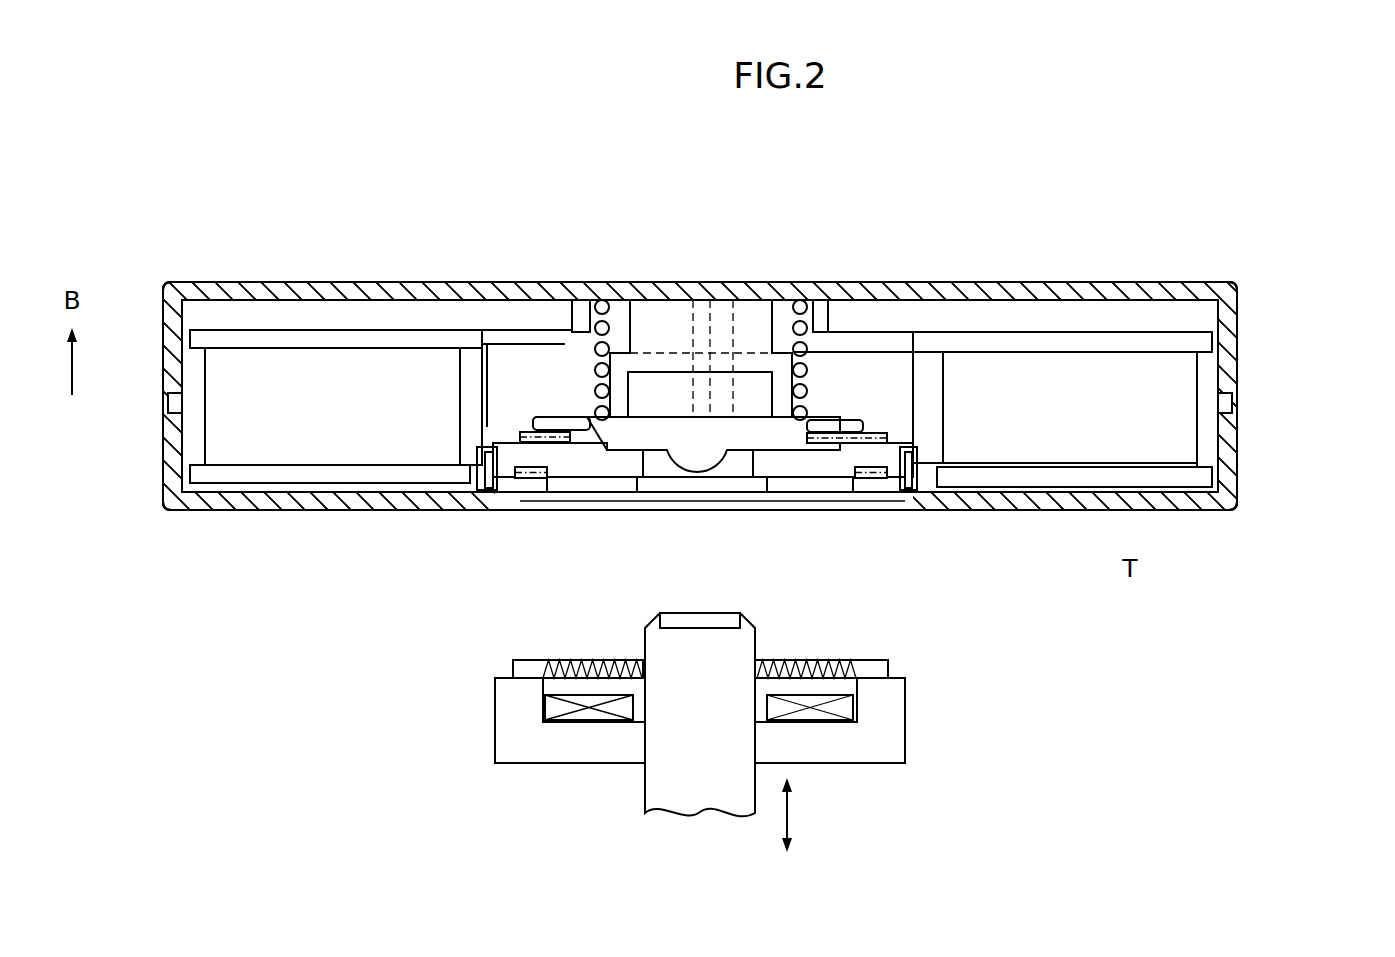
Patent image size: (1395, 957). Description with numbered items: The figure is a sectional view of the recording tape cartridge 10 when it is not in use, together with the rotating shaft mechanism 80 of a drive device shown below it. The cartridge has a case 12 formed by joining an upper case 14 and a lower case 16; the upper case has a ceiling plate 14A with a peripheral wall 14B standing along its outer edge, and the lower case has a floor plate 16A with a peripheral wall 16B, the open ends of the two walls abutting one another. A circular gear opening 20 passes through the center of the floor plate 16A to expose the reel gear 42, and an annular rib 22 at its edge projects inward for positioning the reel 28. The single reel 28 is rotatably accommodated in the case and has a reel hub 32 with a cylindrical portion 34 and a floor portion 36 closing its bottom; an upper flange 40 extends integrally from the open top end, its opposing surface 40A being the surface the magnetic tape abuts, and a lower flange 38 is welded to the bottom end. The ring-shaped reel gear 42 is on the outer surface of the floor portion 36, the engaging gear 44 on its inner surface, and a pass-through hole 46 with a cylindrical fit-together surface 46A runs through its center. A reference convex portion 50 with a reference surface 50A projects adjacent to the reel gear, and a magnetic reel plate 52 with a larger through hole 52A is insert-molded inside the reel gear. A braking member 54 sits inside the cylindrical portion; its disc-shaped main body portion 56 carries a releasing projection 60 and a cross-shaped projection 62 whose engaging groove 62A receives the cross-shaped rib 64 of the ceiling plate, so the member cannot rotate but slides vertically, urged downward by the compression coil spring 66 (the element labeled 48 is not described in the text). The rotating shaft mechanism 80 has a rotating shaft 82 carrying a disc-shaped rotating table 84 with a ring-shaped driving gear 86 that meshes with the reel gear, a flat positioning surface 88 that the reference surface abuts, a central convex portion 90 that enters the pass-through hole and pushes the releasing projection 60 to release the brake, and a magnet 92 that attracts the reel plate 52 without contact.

The recording tape cartridge 10 is at (944, 230).
The case 12 is at (1325, 350).
The upper case 14 is at (1244, 368).
The ceiling plate 14A is at (1130, 290).
The peripheral wall 14B is at (1232, 322).
The lower case 16 is at (1244, 428).
The floor plate 16A is at (1030, 508).
The peripheral wall 16B is at (1232, 480).
The gear opening 20 is at (910, 592).
The annular rib 22 is at (918, 506).
The reel 28 is at (1012, 330).
The reel hub 32 is at (1028, 360).
The cylindrical portion 34 is at (950, 390).
The floor portion 36 is at (948, 432).
The lower flange 38 is at (293, 478).
The upper flange 40 is at (330, 346).
The opposing surface 40A is at (390, 348).
The reel gear 42 is at (527, 480).
The engaging gear 44 is at (876, 430).
The pass-through hole 46 is at (657, 493).
The fit-together surface 46A is at (750, 493).
The coil 48 is at (560, 420).
The reference convex portion 50 is at (486, 470).
The reference surface 50A is at (496, 488).
The reel plate 52 is at (556, 493).
The through hole 52A is at (640, 470).
The braking member 54 is at (828, 390).
The main body portion 56 is at (840, 425).
The releasing projection 60 is at (705, 470).
The cross-shaped projection 62 is at (781, 345).
The engaging groove 62A is at (757, 312).
The cross-shaped rib 64 is at (715, 320).
The compression coil spring 66 is at (619, 303).
The rotating shaft mechanism 80 is at (940, 702).
The rotating shaft 82 is at (715, 805).
The rotating table 84 is at (880, 757).
The driving gear 86 is at (855, 662).
The positioning surface 88 is at (510, 675).
The convex portion 90 is at (746, 632).
The magnet 92 is at (575, 706).